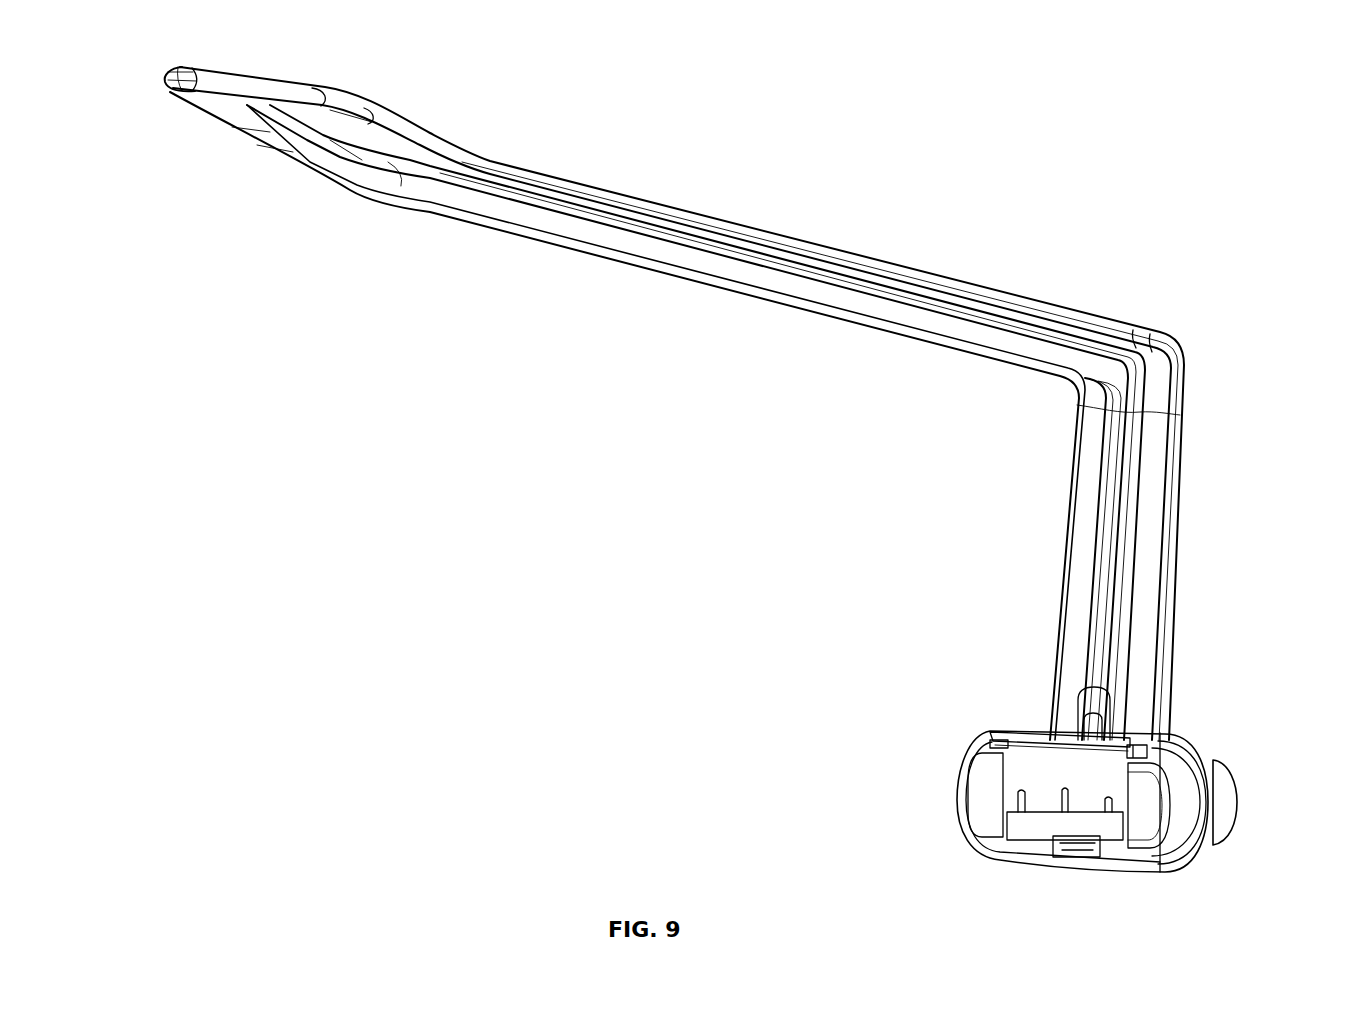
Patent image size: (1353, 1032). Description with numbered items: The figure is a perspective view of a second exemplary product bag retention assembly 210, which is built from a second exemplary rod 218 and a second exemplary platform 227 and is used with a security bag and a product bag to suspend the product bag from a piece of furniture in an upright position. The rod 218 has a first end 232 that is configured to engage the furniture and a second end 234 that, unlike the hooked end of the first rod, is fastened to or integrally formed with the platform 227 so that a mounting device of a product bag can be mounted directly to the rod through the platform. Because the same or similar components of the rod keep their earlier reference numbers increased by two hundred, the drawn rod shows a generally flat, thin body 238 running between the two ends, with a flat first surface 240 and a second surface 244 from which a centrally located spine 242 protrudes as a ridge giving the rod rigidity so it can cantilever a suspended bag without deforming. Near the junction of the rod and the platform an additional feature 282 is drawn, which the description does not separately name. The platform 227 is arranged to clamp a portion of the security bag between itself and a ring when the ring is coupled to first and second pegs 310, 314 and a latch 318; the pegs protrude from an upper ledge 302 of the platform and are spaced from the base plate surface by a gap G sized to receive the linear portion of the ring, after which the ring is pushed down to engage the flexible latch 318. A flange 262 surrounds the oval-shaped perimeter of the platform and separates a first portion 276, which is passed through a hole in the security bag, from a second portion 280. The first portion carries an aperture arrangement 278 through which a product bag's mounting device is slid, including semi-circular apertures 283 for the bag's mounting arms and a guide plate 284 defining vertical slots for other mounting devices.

The second exemplary product bag retention assembly 210 is at (1003, 74).
The first end 232 is at (258, 68).
The flat first surface 240 is at (438, 130).
The second exemplary rod 218 is at (592, 220).
The body 238 is at (803, 252).
The second end 234 is at (1157, 342).
The second surface 244 is at (407, 170).
The spine 242 is at (556, 228).
The tang 282 is at (1078, 728).
The first peg 310 is at (1000, 734).
The upper ledge 302 is at (1040, 741).
The second peg 314 is at (1135, 752).
The gap G is at (1180, 757).
The second exemplary platform 227 is at (1175, 787).
The second portion 280 is at (1223, 803).
The semi-circular apertures 283 is at (975, 784).
The guide plate 284 is at (975, 832).
The aperture arrangement 278 is at (1018, 822).
The latch 318 is at (1077, 853).
The first portion 276 is at (1163, 847).
The flange 262 is at (1185, 848).